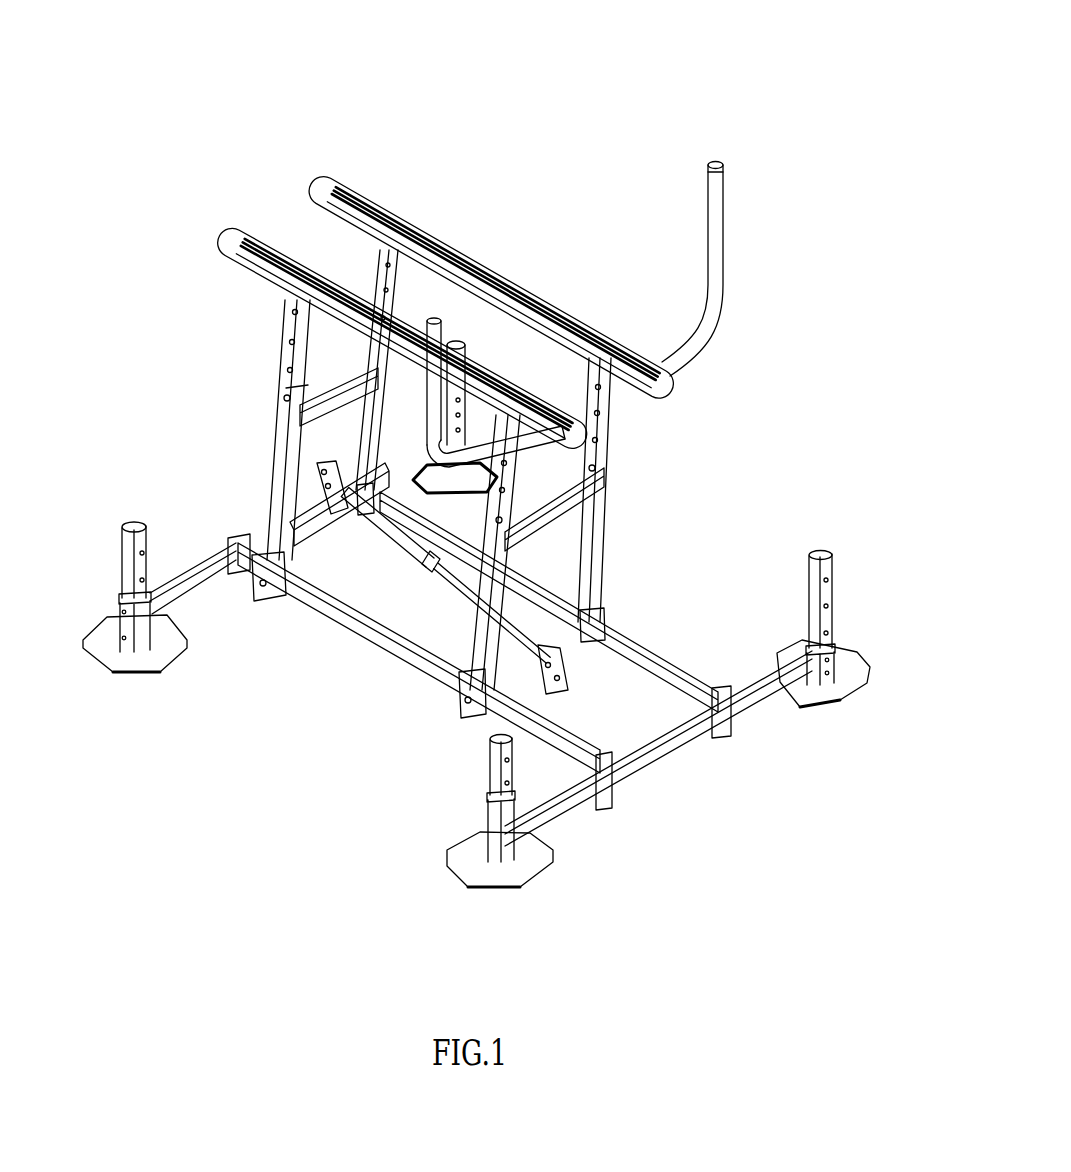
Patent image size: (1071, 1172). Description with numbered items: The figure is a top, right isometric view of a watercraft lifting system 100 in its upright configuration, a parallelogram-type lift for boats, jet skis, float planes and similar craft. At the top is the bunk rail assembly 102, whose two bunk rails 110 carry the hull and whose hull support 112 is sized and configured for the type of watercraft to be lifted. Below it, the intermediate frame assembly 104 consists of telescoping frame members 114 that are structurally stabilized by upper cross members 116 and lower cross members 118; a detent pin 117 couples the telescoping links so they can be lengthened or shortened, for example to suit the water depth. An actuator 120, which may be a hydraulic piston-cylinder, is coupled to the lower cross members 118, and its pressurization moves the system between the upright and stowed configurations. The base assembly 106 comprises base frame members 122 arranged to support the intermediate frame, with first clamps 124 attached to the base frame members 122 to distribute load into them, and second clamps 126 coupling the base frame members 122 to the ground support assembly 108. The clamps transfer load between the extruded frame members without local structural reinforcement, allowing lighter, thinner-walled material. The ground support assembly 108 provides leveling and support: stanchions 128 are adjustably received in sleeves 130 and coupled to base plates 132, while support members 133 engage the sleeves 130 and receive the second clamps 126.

The watercraft lifting system 100 is at (475, 501).
The bunk rail assembly 102 is at (479, 307).
The intermediate frame assembly 104 is at (428, 472).
The base assembly 106 is at (481, 618).
The ground support assembly 108 is at (475, 711).
The bunk rails 110 is at (297, 256).
The hull supports 112 is at (720, 200).
The telescoping frame members 114 is at (598, 562).
The upper cross members 116 is at (345, 392).
The detent pin 117 is at (583, 468).
The lower cross members 118 is at (308, 505).
The actuator 120 is at (445, 587).
The base frame members 122 is at (565, 738).
The first clamps 124 is at (266, 592).
The second clamps 126 is at (236, 537).
The stanchions 128 is at (128, 548).
The sleeves 130 is at (122, 613).
The base plates 132 is at (100, 660).
The support members 133 is at (190, 568).